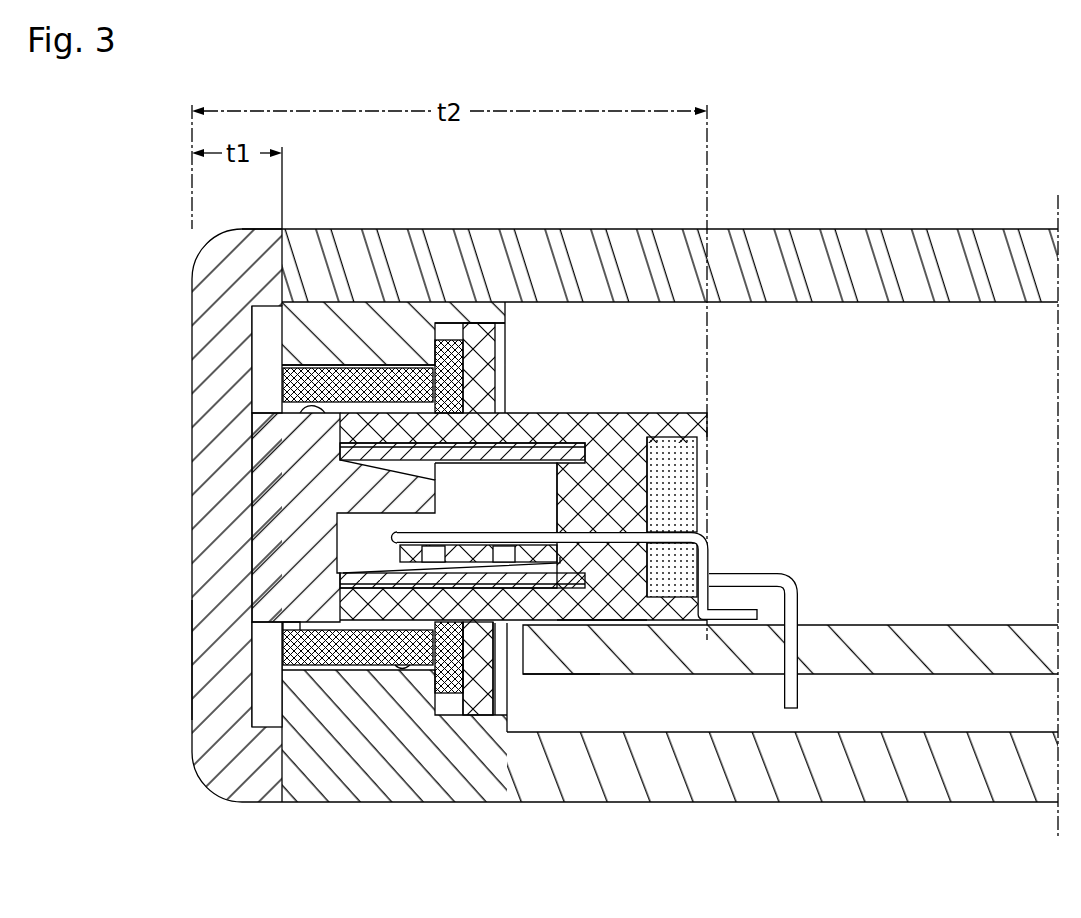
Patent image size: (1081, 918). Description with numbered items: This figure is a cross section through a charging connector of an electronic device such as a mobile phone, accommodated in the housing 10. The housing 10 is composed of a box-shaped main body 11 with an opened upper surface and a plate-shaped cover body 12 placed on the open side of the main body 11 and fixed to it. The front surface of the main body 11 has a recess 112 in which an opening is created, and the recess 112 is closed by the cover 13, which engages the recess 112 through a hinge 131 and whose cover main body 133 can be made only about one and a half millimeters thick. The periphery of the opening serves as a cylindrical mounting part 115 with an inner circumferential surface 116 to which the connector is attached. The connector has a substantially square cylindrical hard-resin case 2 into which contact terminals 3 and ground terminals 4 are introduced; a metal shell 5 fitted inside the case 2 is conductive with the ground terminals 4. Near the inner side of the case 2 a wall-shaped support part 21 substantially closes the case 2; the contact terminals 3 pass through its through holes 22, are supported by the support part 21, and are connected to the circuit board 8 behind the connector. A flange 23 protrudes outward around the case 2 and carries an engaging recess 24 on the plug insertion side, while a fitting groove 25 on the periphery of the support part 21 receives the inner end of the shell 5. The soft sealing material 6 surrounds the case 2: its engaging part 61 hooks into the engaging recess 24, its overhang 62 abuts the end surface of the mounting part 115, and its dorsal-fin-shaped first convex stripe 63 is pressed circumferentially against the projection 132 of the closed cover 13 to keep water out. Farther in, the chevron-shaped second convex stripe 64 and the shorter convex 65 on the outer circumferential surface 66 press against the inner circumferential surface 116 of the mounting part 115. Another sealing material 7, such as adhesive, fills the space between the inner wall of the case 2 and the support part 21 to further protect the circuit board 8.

The case 2 is at (550, 523).
The contact terminals 3 is at (470, 532).
The ground terminals 4 is at (738, 574).
The shell 5 is at (545, 448).
The sealing material 6 is at (415, 595).
The another sealing material 7 is at (680, 492).
The circuit board 8 is at (952, 660).
The housing 10 is at (588, 507).
The main body 11 is at (810, 770).
The cover body 12 is at (650, 291).
The cover 13 is at (276, 515).
The support part 21 is at (632, 450).
The through holes 22 is at (640, 518).
The flange 23 is at (505, 690).
The engaging recess 24 is at (560, 674).
The fitting groove 25 is at (618, 600).
The engaging part 61 is at (475, 402).
The overhang 62 is at (470, 352).
The first convex stripe 63 is at (300, 445).
The second convex stripe 64 is at (458, 695).
The convex 65 is at (304, 680).
The outer circumferential surface 66 is at (392, 680).
The recess 112 is at (298, 330).
The mounting part 115 is at (372, 350).
The inner circumferential surface 116 is at (352, 345).
The hinge 131 is at (262, 686).
The projection 132 is at (283, 548).
The cover main body 133 is at (222, 660).